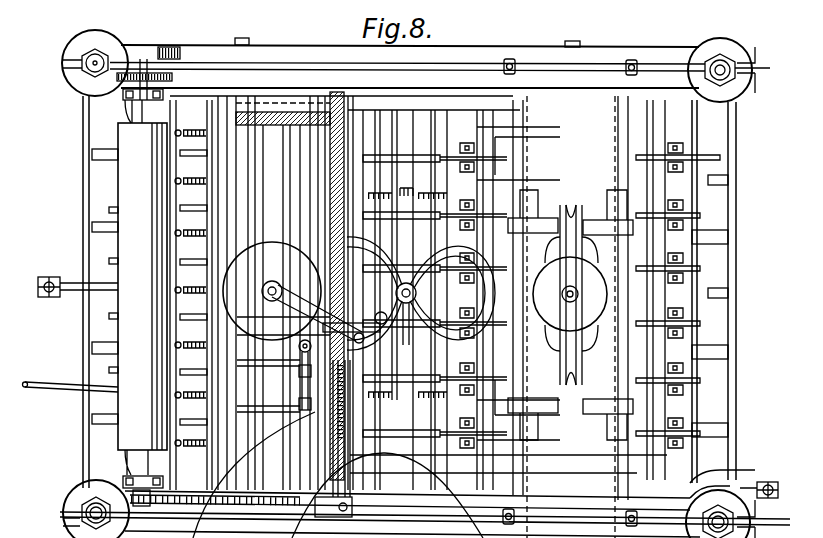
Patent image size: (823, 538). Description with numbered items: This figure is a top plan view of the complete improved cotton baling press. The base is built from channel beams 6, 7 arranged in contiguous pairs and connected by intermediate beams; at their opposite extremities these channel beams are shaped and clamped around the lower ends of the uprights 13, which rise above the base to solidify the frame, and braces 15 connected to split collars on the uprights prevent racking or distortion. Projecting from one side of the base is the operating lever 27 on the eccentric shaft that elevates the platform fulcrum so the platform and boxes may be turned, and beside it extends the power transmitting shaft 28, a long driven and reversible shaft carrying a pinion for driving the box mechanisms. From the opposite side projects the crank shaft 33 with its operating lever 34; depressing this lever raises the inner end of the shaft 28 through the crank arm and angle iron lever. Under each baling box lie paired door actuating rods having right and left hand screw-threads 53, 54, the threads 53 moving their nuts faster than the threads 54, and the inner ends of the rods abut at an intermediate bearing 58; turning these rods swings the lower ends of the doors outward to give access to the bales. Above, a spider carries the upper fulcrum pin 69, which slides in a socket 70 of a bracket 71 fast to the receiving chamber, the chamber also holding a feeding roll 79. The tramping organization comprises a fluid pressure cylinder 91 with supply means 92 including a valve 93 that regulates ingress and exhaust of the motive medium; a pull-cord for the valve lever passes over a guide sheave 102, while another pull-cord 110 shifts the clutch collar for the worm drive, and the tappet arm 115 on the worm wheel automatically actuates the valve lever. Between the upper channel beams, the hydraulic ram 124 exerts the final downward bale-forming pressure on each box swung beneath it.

The channel beam 6 is at (748, 52).
The channel beam 7 is at (742, 93).
The upright 13 is at (432, 63).
The brace 15 is at (737, 255).
The operating lever 27 is at (48, 300).
The power transmitting shaft 28 is at (48, 390).
The crank shaft 33 is at (702, 488).
The operating lever 34 is at (769, 480).
The screw-thread 53 is at (446, 187).
The screw-thread 54 is at (367, 192).
The intermediate bearing 58 is at (400, 192).
The upper fulcrum pin 69 is at (439, 312).
The socket 70 is at (444, 285).
The bracket 71 is at (374, 267).
The feeding roll 79 is at (128, 275).
The fluid pressure cylinder 91 is at (317, 314).
The fluid pressure supply means 92 is at (272, 291).
The valve 93 is at (374, 320).
The guide sheave 102 is at (350, 494).
The pull-cord 110 is at (323, 455).
The tappet arm 115 is at (300, 389).
The hydraulic ram 124 is at (592, 296).